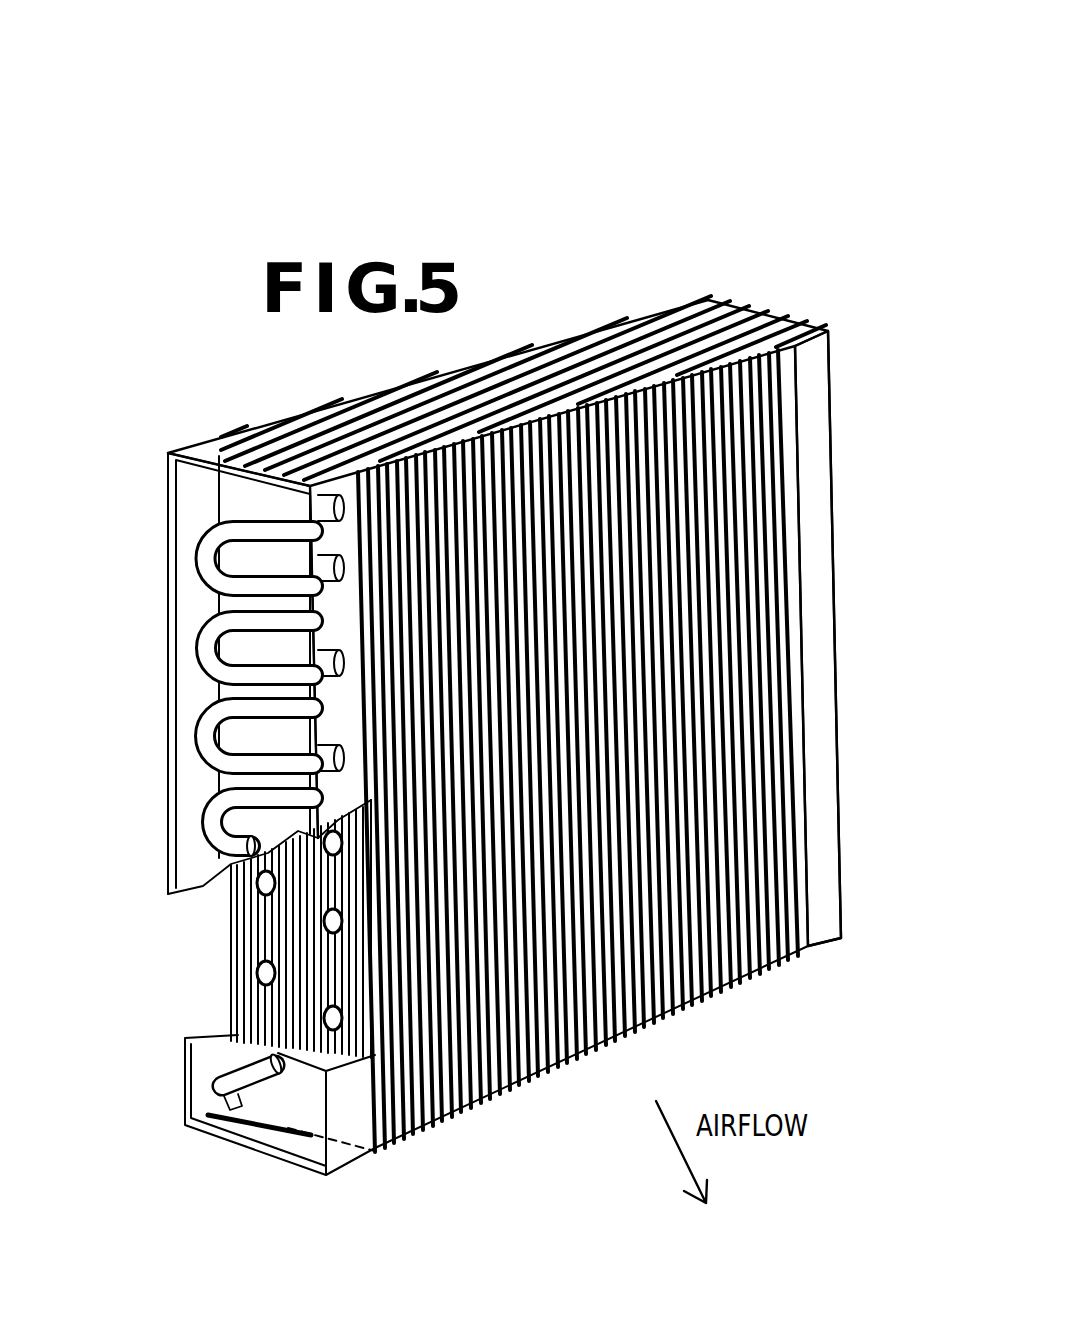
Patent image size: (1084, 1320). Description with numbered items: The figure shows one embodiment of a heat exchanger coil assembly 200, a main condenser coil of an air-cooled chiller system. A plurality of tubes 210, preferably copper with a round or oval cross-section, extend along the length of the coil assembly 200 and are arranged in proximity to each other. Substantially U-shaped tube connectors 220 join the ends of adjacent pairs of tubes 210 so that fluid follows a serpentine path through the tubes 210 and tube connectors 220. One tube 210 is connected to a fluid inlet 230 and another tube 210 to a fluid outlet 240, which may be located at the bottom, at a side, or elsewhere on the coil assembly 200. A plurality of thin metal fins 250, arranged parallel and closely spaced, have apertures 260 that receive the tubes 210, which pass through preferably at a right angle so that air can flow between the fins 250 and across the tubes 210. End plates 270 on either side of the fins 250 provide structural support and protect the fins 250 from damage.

The heat exchanger coil assembly 200 is at (611, 142).
The tubes 210 is at (212, 497).
The tube connectors 220 is at (200, 540).
The fluid inlet 230 is at (275, 503).
The fluid outlet 240 is at (210, 1108).
The fins 250 is at (407, 1130).
The apertures 260 is at (225, 962).
The end plates 270 is at (822, 402).